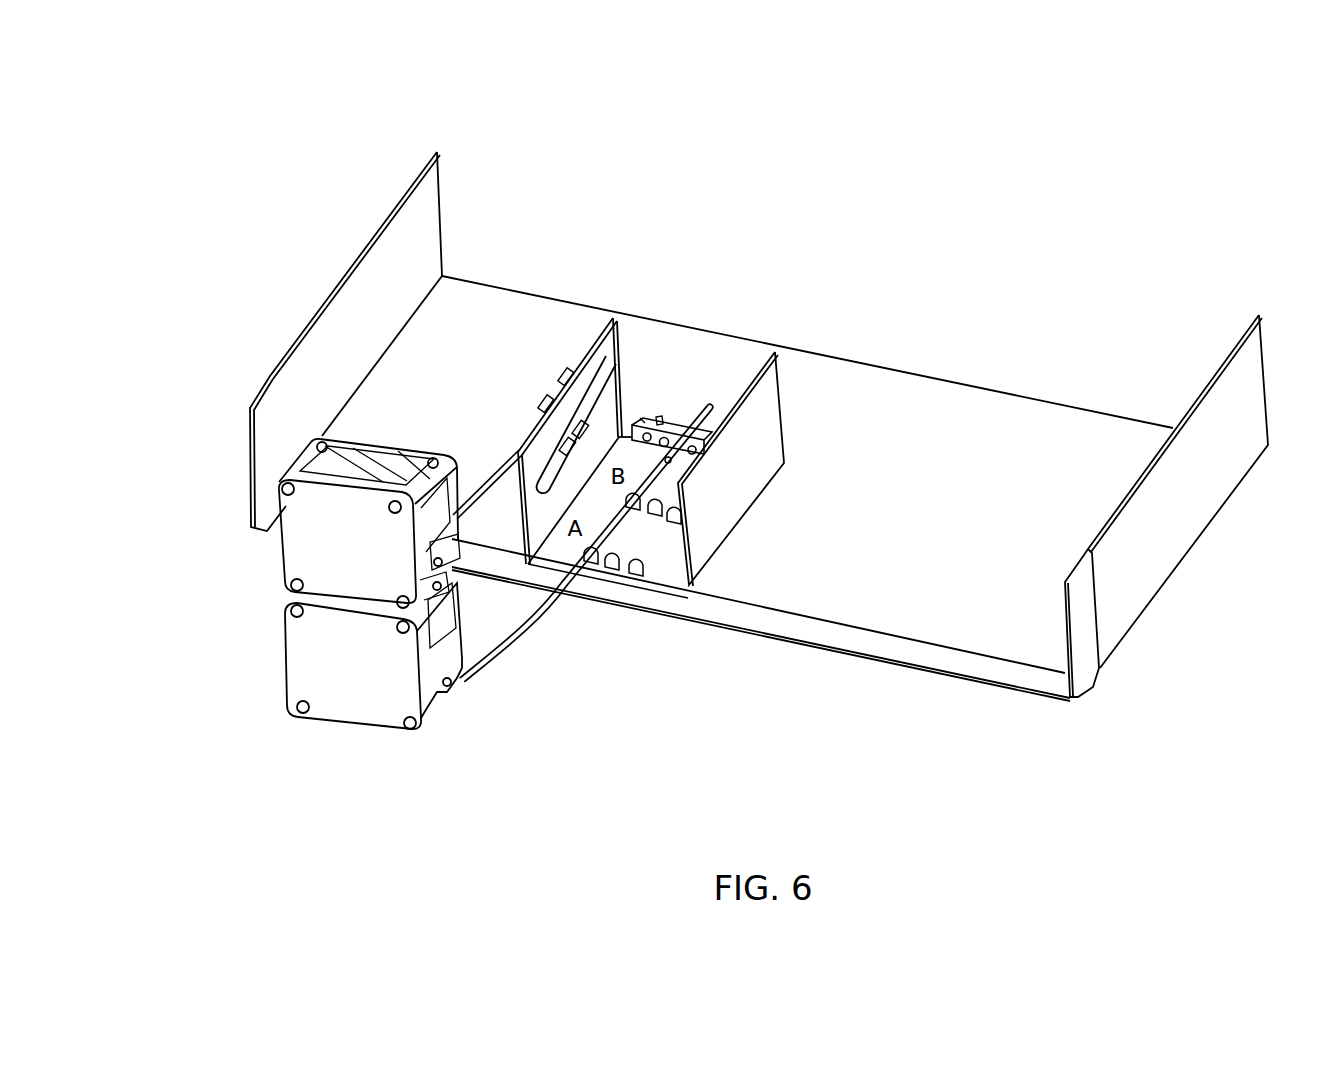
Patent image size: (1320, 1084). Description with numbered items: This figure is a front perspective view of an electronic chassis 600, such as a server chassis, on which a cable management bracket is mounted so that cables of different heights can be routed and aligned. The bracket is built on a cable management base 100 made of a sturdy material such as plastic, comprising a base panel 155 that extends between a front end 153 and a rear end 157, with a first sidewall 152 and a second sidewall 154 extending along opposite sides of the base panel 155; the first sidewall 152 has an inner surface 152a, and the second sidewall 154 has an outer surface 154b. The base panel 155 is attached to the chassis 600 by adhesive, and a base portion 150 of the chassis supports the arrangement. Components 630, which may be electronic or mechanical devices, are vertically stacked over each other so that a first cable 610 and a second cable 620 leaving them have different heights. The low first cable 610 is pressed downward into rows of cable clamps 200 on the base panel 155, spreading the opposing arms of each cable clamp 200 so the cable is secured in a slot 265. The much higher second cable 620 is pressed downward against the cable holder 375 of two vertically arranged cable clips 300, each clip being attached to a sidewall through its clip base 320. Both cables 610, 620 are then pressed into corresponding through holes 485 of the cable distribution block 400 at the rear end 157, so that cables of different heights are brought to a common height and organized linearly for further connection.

The electronic chassis 600 is at (312, 136).
The cable management base 100 is at (797, 436).
The base plate 150 is at (749, 497).
The first sidewall 152 is at (616, 330).
The inner surface 152a is at (548, 495).
The front end 153 is at (517, 578).
The second sidewall 154 is at (761, 393).
The outer surface 154b is at (770, 462).
The base panel 155 is at (667, 572).
The rear end 157 is at (649, 415).
The cable clamp 200 is at (626, 572).
The slot 265 is at (643, 583).
The cable clip 300 is at (547, 407).
The clip base 320 is at (573, 387).
The cable holder 375 is at (618, 340).
The cable distribution block 400 is at (683, 414).
The through hole 485 is at (670, 461).
The first cable 610 is at (513, 640).
The second cable 620 is at (497, 482).
The components 630 is at (300, 564).